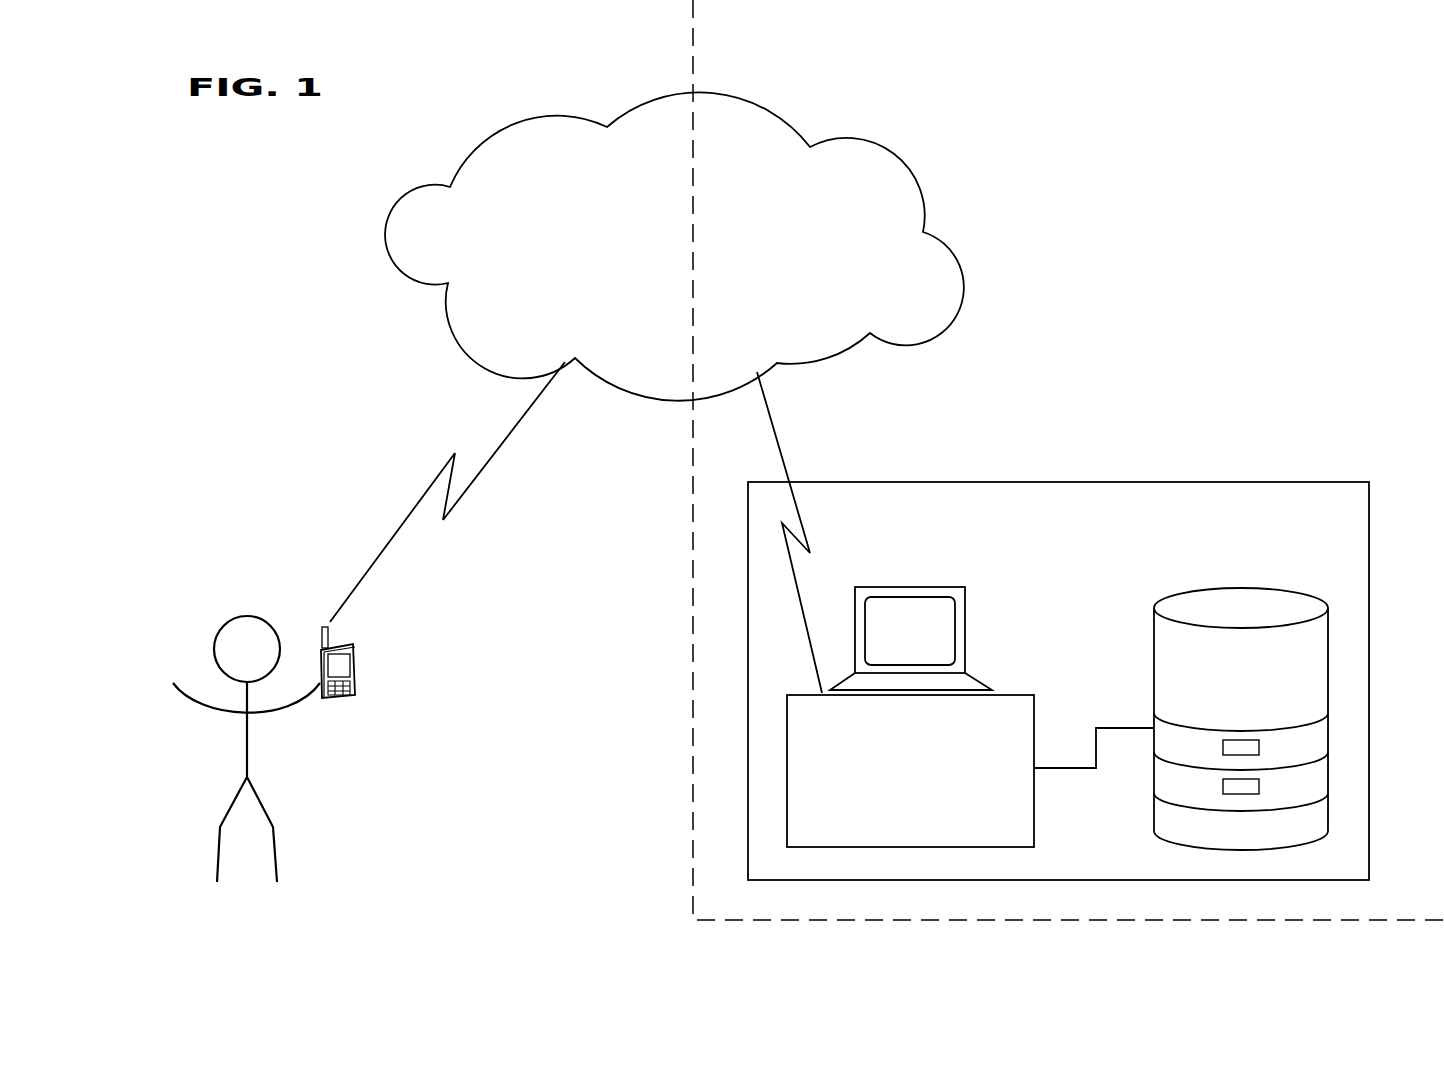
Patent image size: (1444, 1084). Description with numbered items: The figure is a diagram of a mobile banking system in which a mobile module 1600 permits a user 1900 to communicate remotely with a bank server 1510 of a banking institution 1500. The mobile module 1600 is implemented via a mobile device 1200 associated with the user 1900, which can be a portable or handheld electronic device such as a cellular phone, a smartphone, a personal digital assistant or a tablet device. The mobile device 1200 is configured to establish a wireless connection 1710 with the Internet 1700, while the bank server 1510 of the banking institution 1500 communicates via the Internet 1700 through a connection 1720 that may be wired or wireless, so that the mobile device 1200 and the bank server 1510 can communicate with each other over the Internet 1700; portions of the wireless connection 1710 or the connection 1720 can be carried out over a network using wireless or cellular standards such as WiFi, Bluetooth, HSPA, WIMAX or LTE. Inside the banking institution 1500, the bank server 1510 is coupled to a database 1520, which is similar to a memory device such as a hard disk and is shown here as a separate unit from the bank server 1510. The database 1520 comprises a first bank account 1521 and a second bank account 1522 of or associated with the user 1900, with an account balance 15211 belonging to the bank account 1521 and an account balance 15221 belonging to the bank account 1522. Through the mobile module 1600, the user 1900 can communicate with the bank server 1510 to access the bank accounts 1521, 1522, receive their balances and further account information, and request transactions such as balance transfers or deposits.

The Internet 1700 is at (710, 245).
The wireless connection 1710 is at (402, 525).
The connection 1720 is at (783, 438).
The user 1900 is at (208, 594).
The mobile module 1600 is at (357, 683).
The mobile device 1200 is at (347, 700).
The banking institution 1500 is at (1080, 560).
The bank server 1510 is at (1013, 694).
The database 1520 is at (1235, 587).
The bank account 1521 is at (1310, 738).
The account balance 15211 is at (1240, 745).
The bank account 1522 is at (1313, 777).
The account balance 15221 is at (1243, 793).